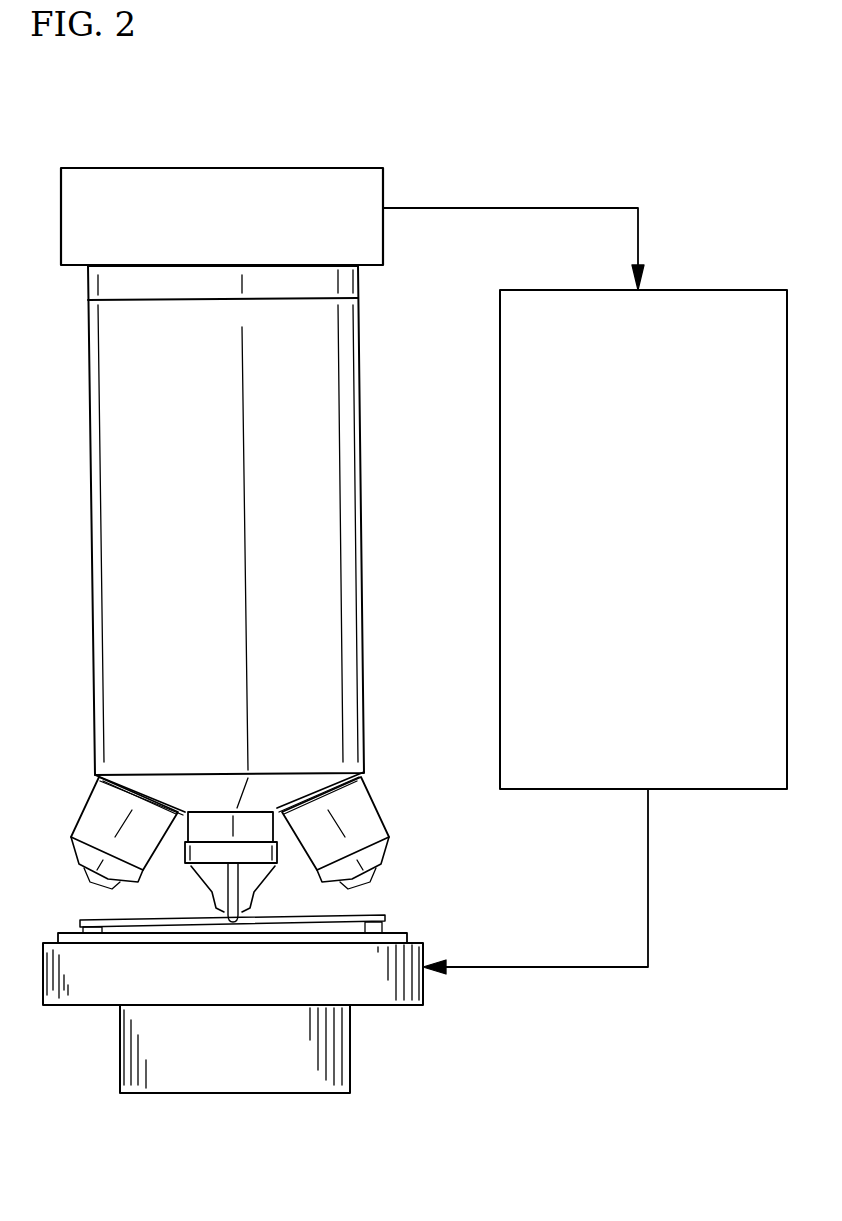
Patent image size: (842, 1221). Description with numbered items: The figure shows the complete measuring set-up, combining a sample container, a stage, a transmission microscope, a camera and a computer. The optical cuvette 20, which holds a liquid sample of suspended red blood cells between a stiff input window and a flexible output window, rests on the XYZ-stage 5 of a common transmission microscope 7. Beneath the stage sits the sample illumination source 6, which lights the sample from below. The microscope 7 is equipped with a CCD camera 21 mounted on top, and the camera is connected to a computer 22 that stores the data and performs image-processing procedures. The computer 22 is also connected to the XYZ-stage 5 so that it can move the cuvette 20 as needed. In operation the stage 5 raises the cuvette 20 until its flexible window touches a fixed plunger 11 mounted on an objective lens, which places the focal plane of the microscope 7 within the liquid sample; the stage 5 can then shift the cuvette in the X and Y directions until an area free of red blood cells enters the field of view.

The XYZ-stage 5 is at (397, 990).
The sample illumination source 6 is at (302, 1073).
The transmission microscope 7 is at (118, 438).
The plunger 11 is at (237, 918).
The optical cuvette 20 is at (352, 908).
The CCD camera 21 is at (322, 184).
The computer 22 is at (730, 313).